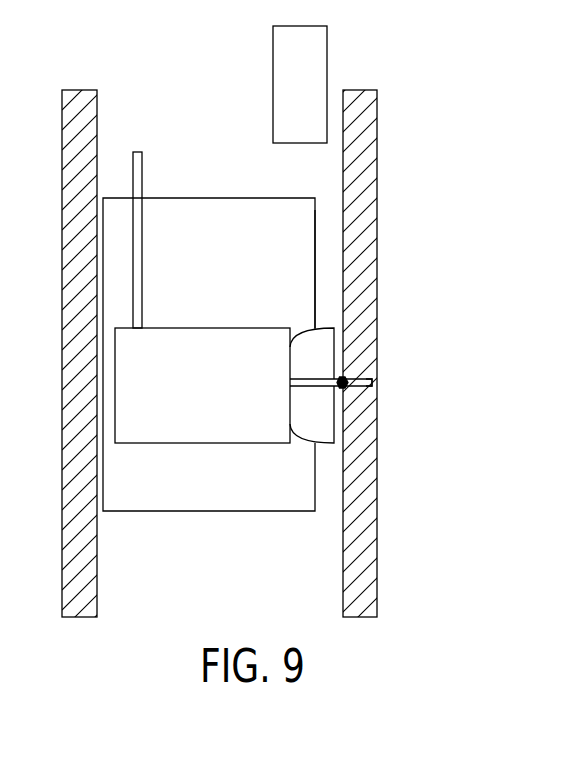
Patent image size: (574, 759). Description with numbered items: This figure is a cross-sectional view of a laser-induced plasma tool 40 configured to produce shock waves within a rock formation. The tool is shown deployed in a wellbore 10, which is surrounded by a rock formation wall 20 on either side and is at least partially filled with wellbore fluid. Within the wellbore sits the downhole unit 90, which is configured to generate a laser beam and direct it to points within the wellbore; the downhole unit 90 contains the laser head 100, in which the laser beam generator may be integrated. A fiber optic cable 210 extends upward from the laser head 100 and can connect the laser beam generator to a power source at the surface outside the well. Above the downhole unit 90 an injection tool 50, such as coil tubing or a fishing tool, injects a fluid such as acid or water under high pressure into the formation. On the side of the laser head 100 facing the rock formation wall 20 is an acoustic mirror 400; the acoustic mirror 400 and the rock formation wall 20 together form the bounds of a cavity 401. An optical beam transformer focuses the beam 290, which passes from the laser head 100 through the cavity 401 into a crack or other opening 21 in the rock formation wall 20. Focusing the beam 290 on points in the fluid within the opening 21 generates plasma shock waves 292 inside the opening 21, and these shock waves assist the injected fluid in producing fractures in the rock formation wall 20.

The wellbore 10 is at (327, 230).
The rock formation wall 20 is at (372, 138).
The opening 21 is at (375, 383).
The laser-induced plasma tool 40 is at (156, 102).
The injection tool 50 is at (328, 60).
The downhole unit 90 is at (198, 198).
The laser head 100 is at (177, 328).
The fiber optic cable 210 is at (145, 173).
The beam 290 is at (305, 389).
The plasma shock waves 292 is at (345, 381).
The acoustic mirror 400 is at (340, 332).
The cavity 401 is at (323, 352).